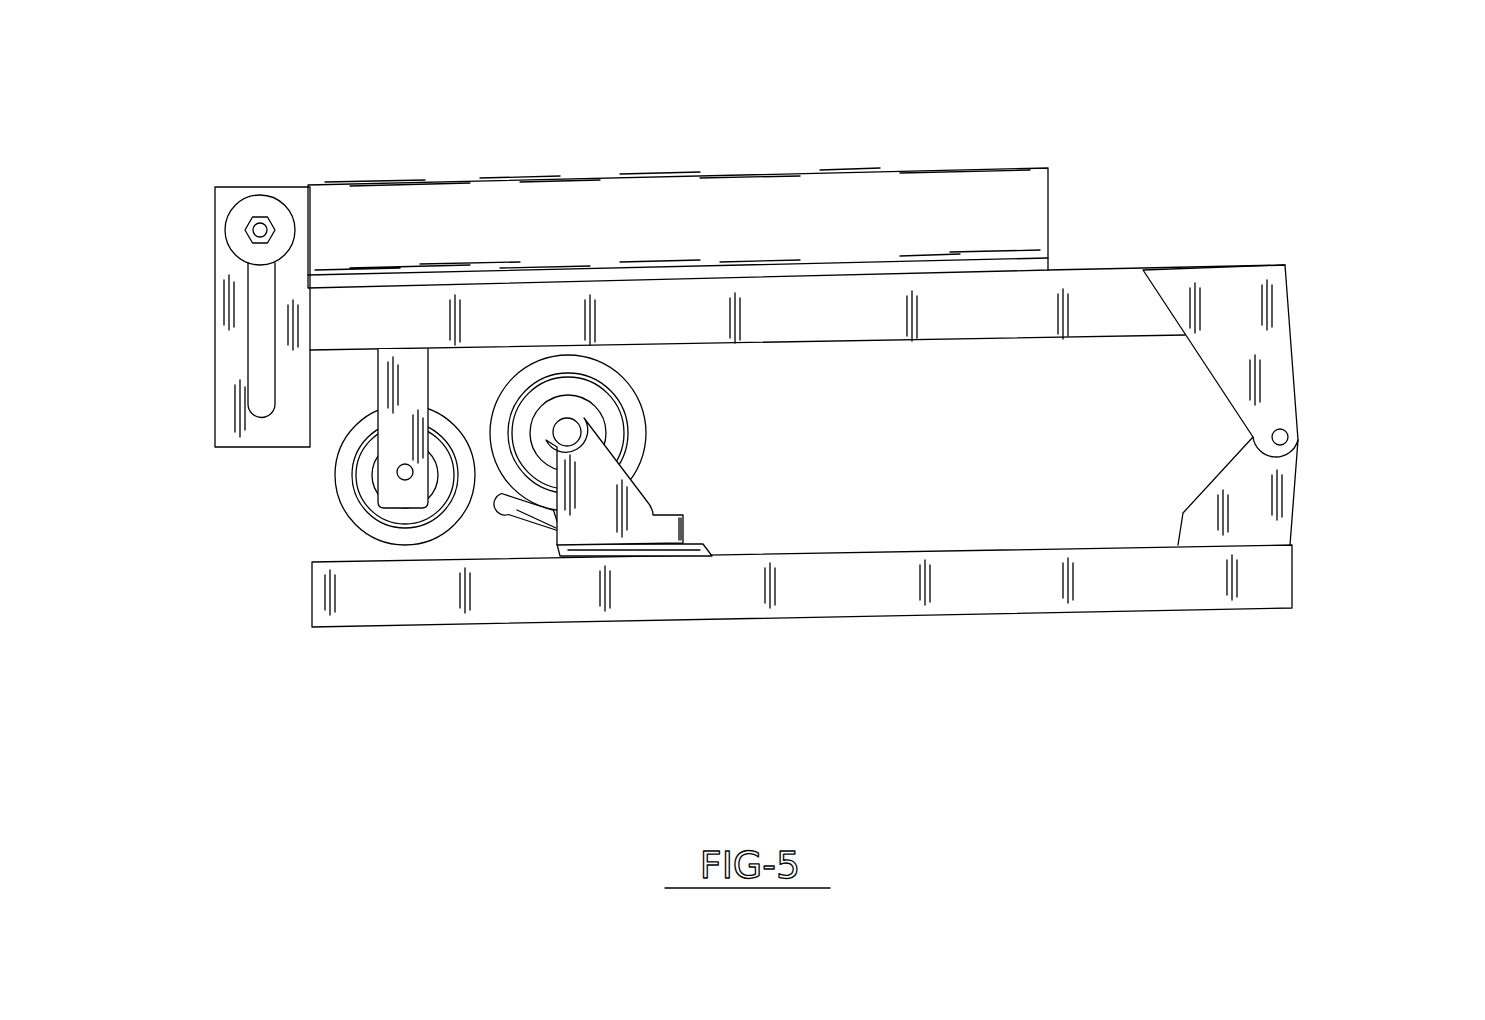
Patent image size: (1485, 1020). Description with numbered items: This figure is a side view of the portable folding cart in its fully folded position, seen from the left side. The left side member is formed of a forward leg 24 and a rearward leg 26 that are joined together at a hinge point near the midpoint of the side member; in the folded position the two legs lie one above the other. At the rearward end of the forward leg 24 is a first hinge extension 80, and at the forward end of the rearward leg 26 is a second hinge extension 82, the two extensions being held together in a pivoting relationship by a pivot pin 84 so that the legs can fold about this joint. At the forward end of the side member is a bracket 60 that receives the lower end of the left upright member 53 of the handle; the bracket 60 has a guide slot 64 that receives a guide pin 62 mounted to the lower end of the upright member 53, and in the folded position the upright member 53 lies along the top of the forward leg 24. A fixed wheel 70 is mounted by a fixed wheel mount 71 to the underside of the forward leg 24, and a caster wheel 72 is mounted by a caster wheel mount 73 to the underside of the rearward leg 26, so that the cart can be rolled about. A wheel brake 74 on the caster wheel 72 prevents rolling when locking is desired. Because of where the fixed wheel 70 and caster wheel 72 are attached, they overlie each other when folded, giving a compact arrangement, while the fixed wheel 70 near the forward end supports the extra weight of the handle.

The forward leg 24 is at (1123, 290).
The rearward leg 26 is at (830, 588).
The left upright member 53 is at (668, 205).
The bracket 60 is at (230, 348).
The guide pin 62 is at (257, 203).
The guide slot 64 is at (262, 387).
The fixed wheel 70 is at (372, 527).
The fixed wheel mount 71 is at (397, 443).
The caster wheel 72 is at (612, 407).
The caster wheel mount 73 is at (638, 513).
The wheel brake 74 is at (533, 513).
The first hinge extension 80 is at (1260, 353).
The second hinge extension 82 is at (1243, 482).
The pivot pin 84 is at (1300, 433).